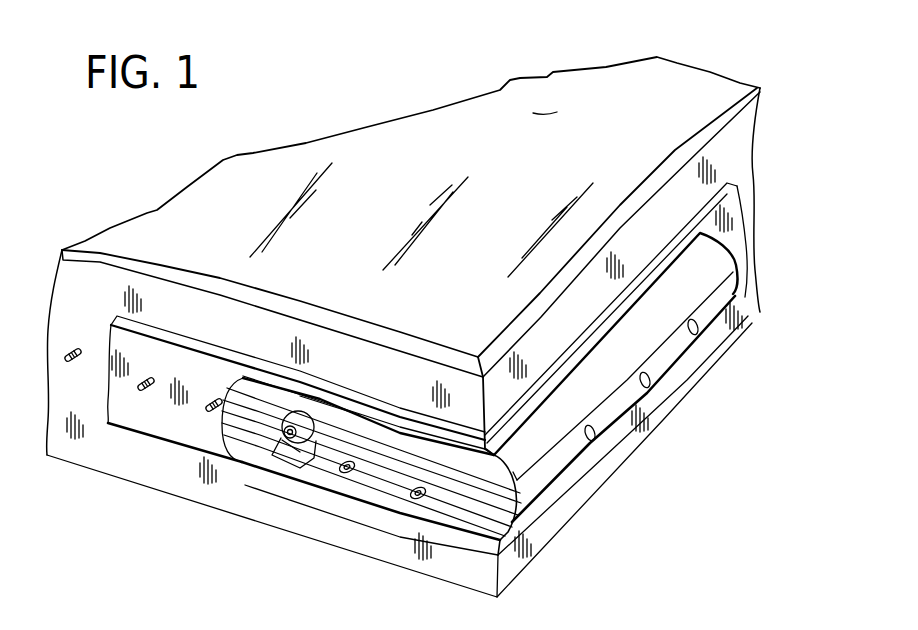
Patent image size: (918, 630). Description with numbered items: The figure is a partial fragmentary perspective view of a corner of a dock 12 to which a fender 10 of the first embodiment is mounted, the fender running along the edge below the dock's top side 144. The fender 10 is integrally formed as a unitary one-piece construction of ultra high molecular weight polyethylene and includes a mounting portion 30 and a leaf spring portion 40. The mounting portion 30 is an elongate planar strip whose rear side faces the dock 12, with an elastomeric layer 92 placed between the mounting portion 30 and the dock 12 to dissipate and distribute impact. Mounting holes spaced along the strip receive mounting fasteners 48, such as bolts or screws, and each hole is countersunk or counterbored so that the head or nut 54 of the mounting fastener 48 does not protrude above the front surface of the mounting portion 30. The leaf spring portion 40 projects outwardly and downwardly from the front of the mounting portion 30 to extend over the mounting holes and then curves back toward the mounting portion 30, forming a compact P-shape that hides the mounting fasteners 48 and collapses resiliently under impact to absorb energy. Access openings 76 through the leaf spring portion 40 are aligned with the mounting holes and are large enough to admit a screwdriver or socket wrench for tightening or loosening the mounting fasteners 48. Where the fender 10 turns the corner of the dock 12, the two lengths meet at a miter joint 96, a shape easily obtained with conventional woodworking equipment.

The fender 10 is at (362, 420).
The dock 12 is at (376, 152).
The mounting portion 30 is at (470, 538).
The leaf spring portion 40 is at (453, 497).
The mounting fastener 48 is at (74, 350).
The head or nut 54 is at (307, 446).
The access openings 76 is at (306, 442).
The elastomeric layer 92 is at (177, 433).
The miter joint 96 is at (513, 472).
The top side 144 is at (547, 110).